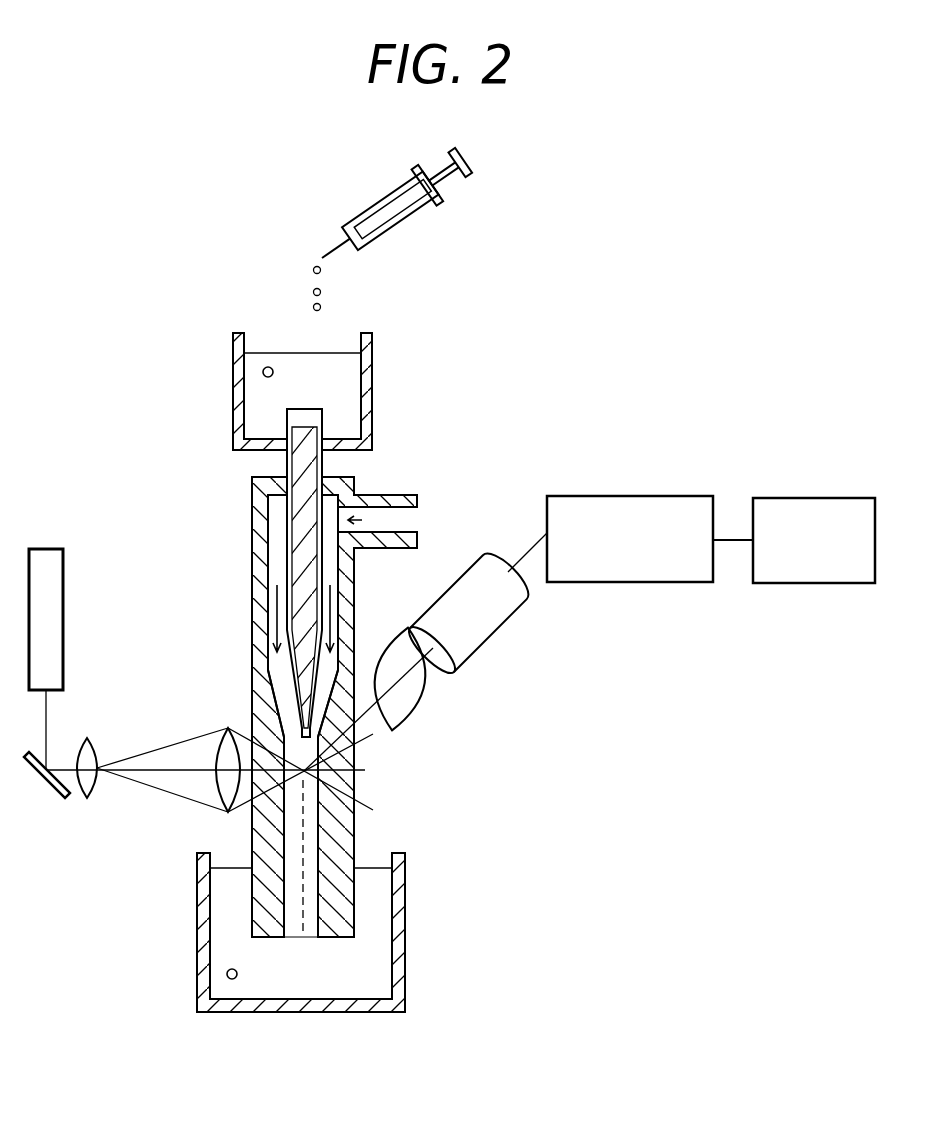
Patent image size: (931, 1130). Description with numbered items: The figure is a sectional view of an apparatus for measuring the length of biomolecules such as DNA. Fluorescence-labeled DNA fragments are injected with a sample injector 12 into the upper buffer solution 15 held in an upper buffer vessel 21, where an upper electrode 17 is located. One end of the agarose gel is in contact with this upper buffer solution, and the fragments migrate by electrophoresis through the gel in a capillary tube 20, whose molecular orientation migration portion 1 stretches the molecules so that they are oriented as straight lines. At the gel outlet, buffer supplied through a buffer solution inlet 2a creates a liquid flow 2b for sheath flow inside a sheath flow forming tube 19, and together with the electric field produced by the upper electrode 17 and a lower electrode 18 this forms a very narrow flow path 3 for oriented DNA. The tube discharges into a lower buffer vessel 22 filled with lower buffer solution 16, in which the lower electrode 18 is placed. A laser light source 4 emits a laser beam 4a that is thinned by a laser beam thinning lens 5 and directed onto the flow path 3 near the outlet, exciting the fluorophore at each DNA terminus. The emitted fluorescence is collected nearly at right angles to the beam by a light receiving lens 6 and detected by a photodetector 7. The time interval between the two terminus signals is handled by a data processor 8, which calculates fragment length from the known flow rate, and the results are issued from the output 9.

The molecular orientation migration portion 1 is at (305, 582).
The buffer solution inlet 2a is at (417, 520).
The liquid flow for sheath flow 2b is at (268, 600).
The flow path for oriented DNA 3 is at (262, 688).
The light source 4 is at (48, 620).
The laser beam 4a is at (63, 768).
The laser beam thinning lens 5 is at (228, 752).
The light receiving lens 6 is at (410, 702).
The photodetector 7 is at (480, 618).
The data processor 8 is at (635, 582).
The output 9 is at (807, 583).
The sample injector 12 is at (475, 162).
The upper buffer solution 15 is at (337, 372).
The lower buffer solution 16 is at (308, 982).
The upper electrode 17 is at (263, 373).
The lower electrode 18 is at (226, 973).
The sheath flow forming tube 19 is at (335, 825).
The capillary tube 20 is at (323, 466).
The upper buffer vessel 21 is at (372, 385).
The lower buffer vessel 22 is at (400, 925).